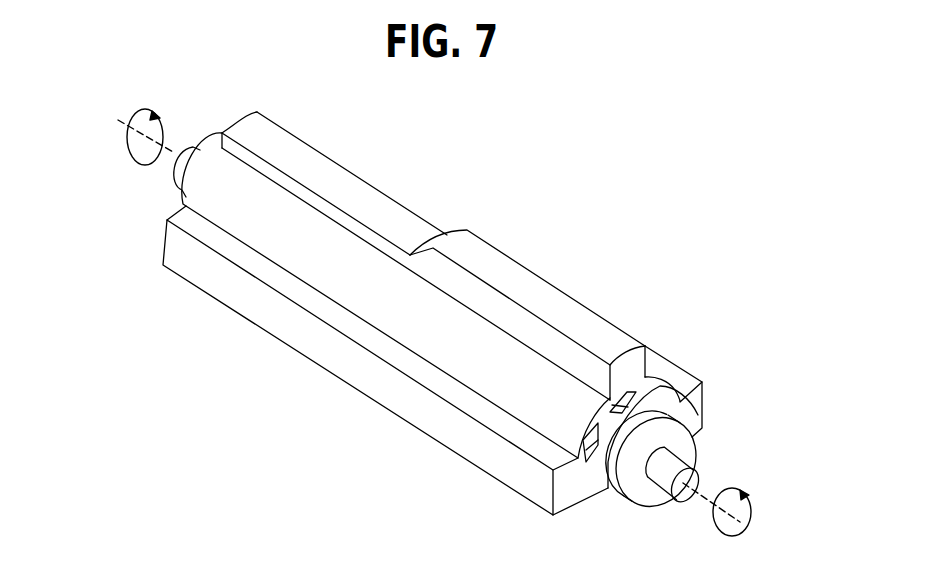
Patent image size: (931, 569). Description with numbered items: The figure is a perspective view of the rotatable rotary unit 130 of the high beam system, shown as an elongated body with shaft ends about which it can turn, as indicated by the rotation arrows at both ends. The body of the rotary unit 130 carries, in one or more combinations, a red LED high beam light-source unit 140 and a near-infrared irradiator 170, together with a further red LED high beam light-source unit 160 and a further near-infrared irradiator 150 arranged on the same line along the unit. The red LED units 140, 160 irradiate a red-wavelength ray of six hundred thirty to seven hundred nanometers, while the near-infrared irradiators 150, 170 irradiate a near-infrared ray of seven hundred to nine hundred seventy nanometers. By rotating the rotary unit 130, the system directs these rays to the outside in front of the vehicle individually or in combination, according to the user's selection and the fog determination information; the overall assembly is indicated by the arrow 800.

The rotary unit 130 is at (492, 373).
The red LED high beam light-source unit 140 is at (370, 390).
The near-infrared irradiator 150 is at (483, 253).
The red LED high beam light-source unit 160 is at (300, 139).
The near-infrared irradiator 170 is at (680, 378).
The roller assembly 800 is at (568, 268).